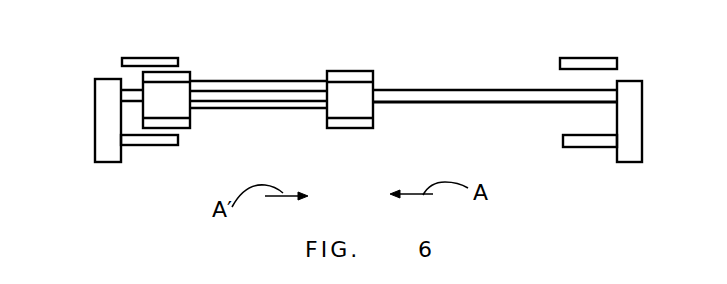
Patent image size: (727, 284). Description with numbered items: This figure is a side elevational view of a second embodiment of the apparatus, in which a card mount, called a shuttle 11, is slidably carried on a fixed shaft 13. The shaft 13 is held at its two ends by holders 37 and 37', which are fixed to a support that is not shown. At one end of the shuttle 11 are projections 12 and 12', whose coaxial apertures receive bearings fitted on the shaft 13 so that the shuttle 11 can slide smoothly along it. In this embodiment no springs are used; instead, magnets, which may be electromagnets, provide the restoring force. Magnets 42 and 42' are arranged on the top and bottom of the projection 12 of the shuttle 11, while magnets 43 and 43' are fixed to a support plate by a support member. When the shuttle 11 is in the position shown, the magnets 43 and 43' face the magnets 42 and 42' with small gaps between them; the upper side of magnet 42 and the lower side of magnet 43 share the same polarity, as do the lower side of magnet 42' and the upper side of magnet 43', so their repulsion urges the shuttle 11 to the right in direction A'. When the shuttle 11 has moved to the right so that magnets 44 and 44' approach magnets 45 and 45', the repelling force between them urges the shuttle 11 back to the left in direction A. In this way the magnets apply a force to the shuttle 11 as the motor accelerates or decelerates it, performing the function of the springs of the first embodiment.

The shuttle 11 is at (300, 82).
The projection 12 is at (182, 108).
The projection 12′ is at (365, 118).
The shaft 13 is at (252, 92).
The holder 37 is at (104, 150).
The holder 37′ is at (630, 162).
The magnet 42 is at (186, 71).
The magnet 42′ is at (180, 130).
The magnet 43 is at (138, 57).
The magnet 43′ is at (152, 148).
The magnet 44 is at (357, 73).
The magnet 44′ is at (352, 128).
The magnet 45 is at (591, 59).
The magnet 45′ is at (577, 148).